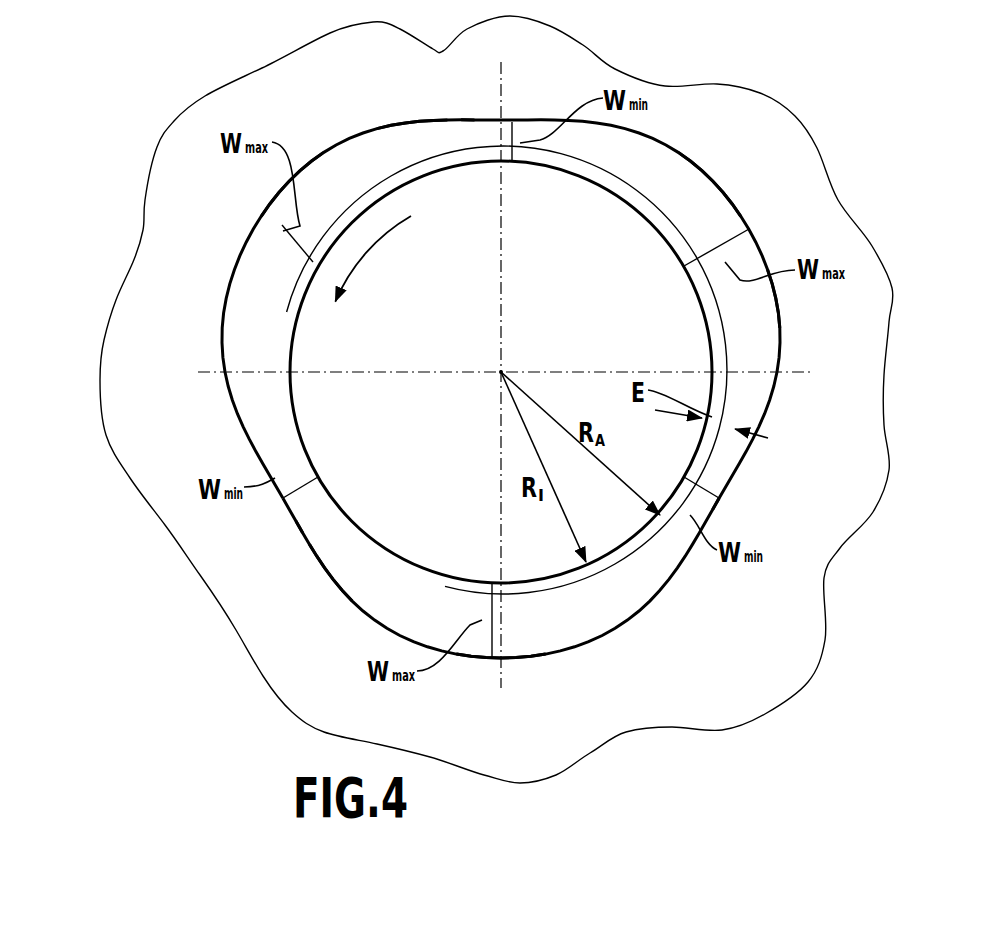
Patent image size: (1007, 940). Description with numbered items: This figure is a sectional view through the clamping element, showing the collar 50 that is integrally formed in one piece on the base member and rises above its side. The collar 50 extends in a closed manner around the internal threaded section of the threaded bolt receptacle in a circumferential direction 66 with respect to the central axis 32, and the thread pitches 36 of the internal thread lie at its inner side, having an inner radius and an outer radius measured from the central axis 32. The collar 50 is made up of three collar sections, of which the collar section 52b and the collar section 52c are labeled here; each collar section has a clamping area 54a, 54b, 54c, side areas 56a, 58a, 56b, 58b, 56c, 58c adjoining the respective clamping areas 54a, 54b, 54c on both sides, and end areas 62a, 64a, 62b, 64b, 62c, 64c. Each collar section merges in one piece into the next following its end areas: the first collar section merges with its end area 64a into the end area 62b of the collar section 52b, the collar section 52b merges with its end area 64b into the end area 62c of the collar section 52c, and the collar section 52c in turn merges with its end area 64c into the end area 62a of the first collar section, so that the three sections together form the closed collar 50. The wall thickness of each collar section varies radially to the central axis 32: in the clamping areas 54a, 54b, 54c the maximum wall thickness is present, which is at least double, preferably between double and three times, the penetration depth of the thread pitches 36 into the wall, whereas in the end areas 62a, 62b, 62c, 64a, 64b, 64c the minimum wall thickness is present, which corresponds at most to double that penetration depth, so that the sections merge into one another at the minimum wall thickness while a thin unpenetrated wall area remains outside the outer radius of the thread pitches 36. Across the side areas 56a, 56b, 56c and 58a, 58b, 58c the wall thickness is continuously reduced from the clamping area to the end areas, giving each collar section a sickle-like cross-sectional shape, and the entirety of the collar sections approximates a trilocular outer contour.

The central axis 32 is at (503, 371).
The thread pitches 36 is at (707, 320).
The collar 50 is at (677, 607).
The collar section 52b is at (718, 248).
The collar section 52c is at (272, 255).
The clamping area 54a is at (486, 629).
The clamping area 54b is at (710, 243).
The clamping area 54c is at (282, 225).
The side area 56a is at (342, 552).
The side area 56b is at (785, 397).
The side area 56c is at (398, 143).
The side area 58a is at (660, 562).
The side area 58b is at (637, 163).
The side area 58c is at (258, 413).
The end area 62a is at (307, 505).
The end area 62b is at (707, 482).
The end area 62c is at (485, 138).
The end area 64a is at (700, 505).
The end area 64b is at (517, 123).
The end area 64c is at (282, 464).
The circumferential direction 66 is at (373, 247).